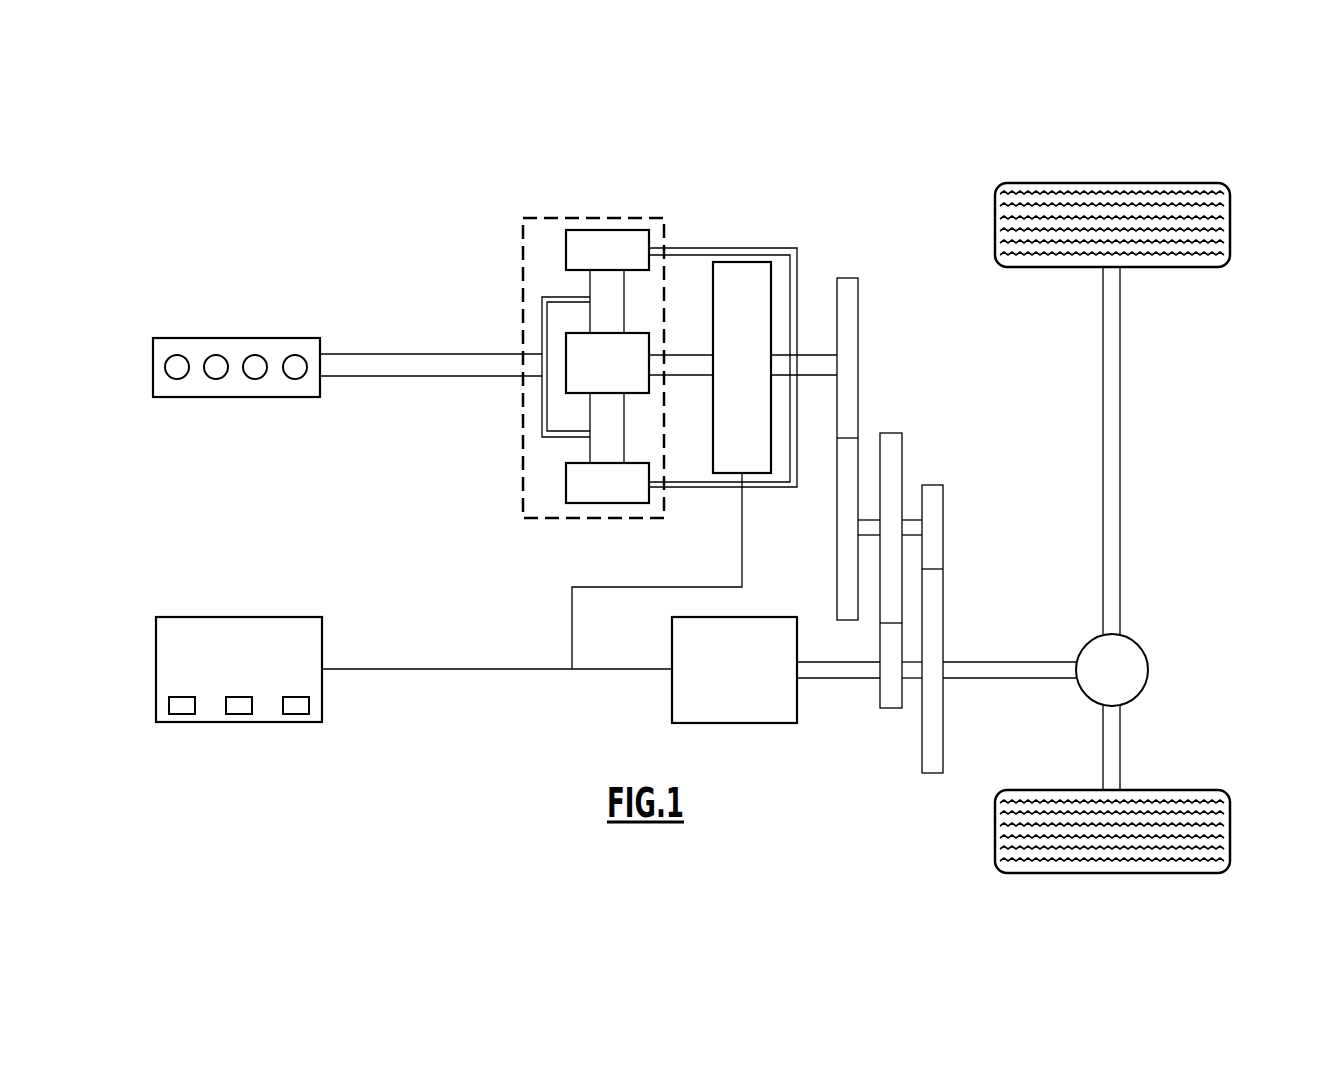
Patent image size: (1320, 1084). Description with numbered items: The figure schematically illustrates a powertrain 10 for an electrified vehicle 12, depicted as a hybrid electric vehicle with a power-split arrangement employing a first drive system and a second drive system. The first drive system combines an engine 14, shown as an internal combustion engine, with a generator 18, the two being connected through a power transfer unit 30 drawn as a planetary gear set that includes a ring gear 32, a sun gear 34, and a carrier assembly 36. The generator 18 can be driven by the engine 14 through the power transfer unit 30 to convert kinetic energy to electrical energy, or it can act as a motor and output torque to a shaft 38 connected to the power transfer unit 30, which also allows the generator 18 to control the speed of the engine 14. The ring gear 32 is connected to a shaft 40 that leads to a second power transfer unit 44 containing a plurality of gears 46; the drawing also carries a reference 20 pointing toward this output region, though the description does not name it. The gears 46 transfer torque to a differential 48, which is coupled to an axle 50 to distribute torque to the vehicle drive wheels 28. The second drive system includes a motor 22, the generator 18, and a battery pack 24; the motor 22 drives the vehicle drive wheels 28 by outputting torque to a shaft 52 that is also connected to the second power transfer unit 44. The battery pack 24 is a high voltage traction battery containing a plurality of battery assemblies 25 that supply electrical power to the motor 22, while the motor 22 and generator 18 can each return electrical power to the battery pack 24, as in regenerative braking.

The powertrain 10 is at (372, 242).
The electrified vehicle 12 is at (766, 178).
The engine 14 is at (170, 338).
The generator 18 is at (722, 262).
The output shaft 20 is at (829, 276).
The motor 22 is at (797, 708).
The battery pack 24 is at (172, 617).
The battery assemblies 25 is at (195, 705).
The vehicle drive wheels 28 is at (1232, 830).
The power transfer unit 30 is at (520, 482).
The ring gear 32 is at (566, 250).
The sun gear 34 is at (566, 338).
The carrier assembly 36 is at (540, 425).
The shaft 38 is at (681, 355).
The shaft 40 is at (815, 353).
The second power transfer unit 44 is at (927, 397).
The gears 46 is at (858, 403).
The differential 48 is at (1142, 690).
The axle 50 is at (1120, 440).
The shaft 52 is at (848, 680).